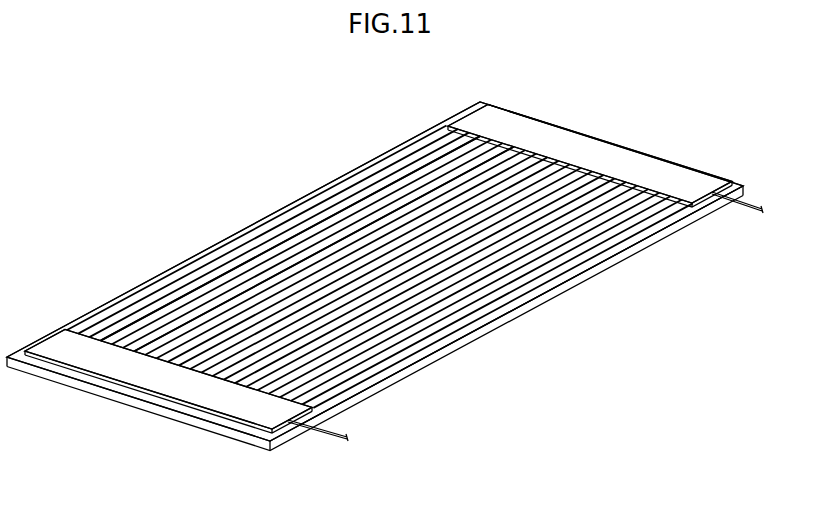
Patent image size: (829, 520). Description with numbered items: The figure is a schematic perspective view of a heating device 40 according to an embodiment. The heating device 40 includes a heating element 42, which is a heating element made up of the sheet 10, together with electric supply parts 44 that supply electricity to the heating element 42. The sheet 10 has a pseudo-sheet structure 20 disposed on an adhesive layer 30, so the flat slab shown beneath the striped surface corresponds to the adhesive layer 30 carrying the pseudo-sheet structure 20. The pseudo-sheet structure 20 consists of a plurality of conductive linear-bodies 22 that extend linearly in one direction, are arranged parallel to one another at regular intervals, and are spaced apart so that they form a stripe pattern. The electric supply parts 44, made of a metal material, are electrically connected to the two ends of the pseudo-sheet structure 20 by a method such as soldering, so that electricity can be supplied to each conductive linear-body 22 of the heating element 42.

The sheet 10 is at (375, 271).
The pseudo-sheet structure 20 is at (493, 313).
The conductive linear-body 22 is at (152, 335).
The adhesive layer 30 is at (410, 372).
The heating device 40 is at (199, 160).
The heating element 42 is at (121, 286).
The electric supply part 44 is at (167, 377).